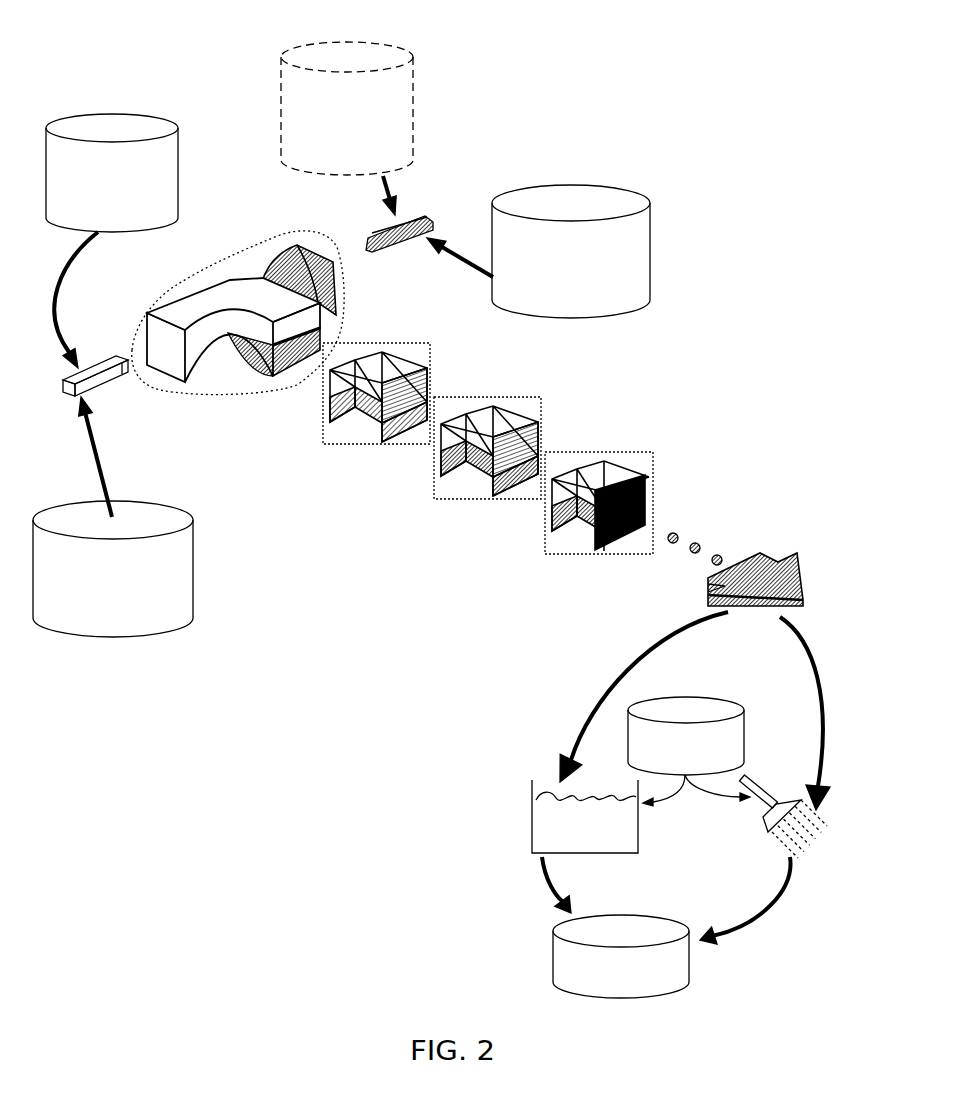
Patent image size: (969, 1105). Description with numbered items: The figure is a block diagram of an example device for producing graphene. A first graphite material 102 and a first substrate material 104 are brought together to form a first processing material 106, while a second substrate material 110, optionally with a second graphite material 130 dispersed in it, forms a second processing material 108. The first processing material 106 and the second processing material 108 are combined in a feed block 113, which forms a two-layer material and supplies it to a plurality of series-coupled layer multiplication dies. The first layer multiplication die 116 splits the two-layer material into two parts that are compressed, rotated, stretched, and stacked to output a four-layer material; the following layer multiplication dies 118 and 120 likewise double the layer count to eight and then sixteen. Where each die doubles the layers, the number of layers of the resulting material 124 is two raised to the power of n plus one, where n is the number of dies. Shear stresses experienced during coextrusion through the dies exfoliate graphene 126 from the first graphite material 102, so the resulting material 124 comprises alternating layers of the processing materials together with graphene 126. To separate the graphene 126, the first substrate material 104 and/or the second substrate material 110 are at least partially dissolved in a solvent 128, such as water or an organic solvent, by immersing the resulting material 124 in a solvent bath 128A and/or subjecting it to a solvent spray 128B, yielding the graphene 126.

The first graphite material 102 is at (142, 128).
The first substrate material 104 is at (183, 588).
The first processing material 106 is at (110, 360).
The second processing material 108 is at (370, 231).
The second substrate material 110 is at (615, 202).
The feed block 113 is at (222, 268).
The layer multiplication die 116 is at (382, 446).
The layer multiplication die 118 is at (500, 500).
The layer multiplication die 120 is at (612, 556).
The resulting material 124 is at (808, 545).
The graphene 126 is at (619, 928).
The solvent 128 is at (715, 708).
The solvent bath 128A is at (547, 835).
The solvent spray 128B is at (836, 806).
The second graphite material 130 is at (382, 58).